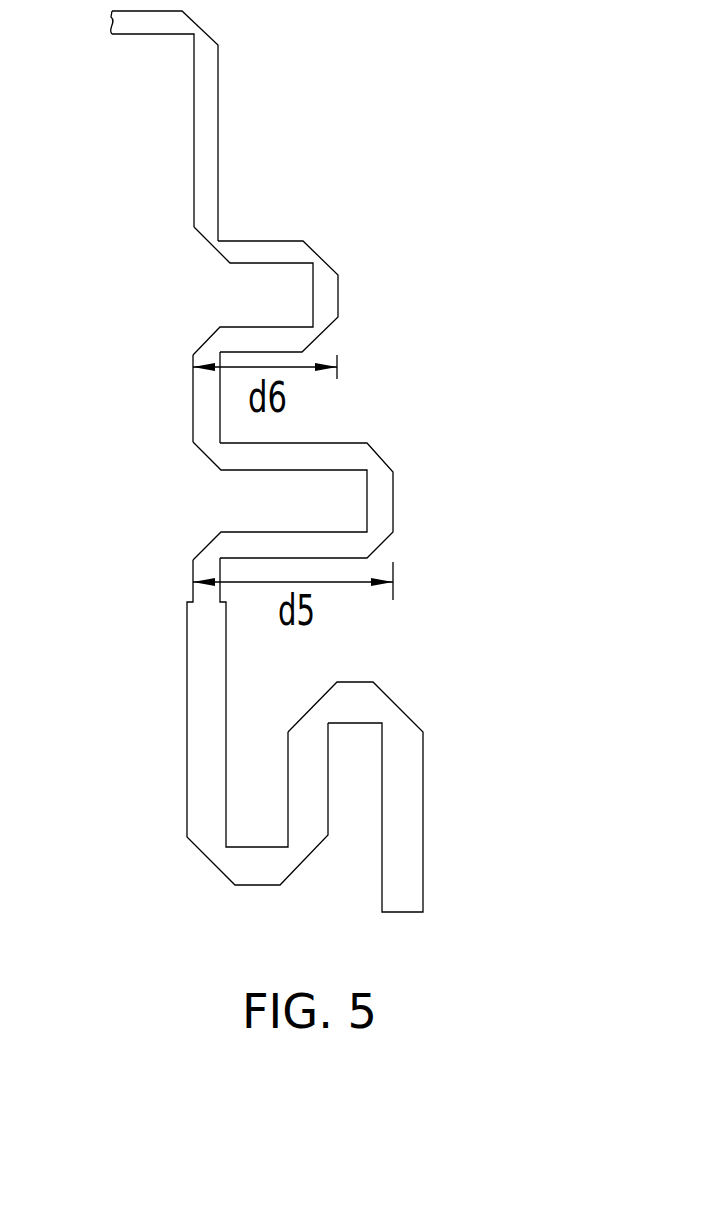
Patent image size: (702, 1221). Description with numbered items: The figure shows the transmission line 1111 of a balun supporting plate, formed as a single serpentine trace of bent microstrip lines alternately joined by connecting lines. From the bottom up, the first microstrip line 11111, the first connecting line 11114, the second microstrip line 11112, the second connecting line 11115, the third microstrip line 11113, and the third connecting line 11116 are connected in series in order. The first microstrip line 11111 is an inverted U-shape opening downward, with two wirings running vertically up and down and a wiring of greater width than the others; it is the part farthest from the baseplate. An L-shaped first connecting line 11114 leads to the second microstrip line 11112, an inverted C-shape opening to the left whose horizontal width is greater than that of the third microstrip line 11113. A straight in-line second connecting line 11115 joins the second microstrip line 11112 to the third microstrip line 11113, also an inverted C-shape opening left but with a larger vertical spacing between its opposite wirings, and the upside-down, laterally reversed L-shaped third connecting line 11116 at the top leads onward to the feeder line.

The transmission line 1111 is at (372, 175).
The first microstrip line 11111 is at (400, 755).
The second microstrip line 11112 is at (380, 477).
The third microstrip line 11113 is at (323, 297).
The first connecting line 11114 is at (202, 750).
The second connecting line 11115 is at (207, 417).
The third connecting line 11116 is at (205, 170).